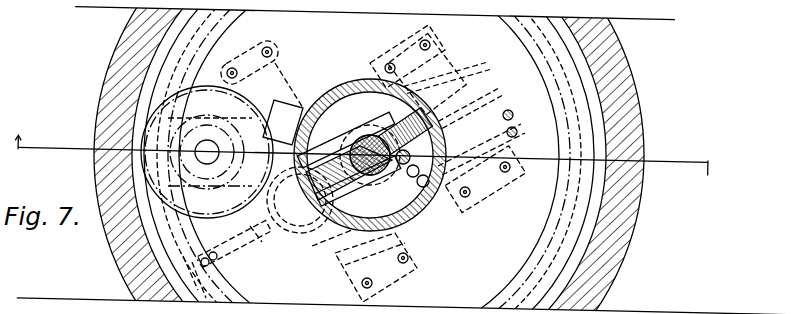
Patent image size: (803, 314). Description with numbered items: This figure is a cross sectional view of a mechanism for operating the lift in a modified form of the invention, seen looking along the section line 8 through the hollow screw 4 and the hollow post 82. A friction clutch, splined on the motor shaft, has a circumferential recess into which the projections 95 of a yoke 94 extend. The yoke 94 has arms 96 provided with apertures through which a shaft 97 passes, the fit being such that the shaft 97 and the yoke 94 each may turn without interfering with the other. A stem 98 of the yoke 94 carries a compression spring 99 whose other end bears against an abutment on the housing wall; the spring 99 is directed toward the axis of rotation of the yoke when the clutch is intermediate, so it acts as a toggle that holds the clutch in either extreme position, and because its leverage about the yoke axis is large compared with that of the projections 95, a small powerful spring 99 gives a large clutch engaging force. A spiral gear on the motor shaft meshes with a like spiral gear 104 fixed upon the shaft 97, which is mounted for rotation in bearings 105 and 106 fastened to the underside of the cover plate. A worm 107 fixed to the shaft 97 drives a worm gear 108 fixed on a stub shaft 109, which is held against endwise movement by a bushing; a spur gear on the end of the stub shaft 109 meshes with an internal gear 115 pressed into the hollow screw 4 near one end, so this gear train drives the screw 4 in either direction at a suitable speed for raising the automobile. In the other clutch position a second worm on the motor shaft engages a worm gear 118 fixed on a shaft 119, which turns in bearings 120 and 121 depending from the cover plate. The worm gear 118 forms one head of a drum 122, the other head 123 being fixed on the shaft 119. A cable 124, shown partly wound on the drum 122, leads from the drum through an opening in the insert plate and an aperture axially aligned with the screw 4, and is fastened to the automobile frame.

The hollow screw 4 is at (106, 242).
The section line 8- 8 is at (361, 165).
The hollow post 82 is at (358, 80).
The yoke 94 is at (338, 132).
The projections 95 is at (362, 135).
The arms 96 is at (377, 173).
The shaft 97 is at (340, 230).
The stem 98 is at (258, 236).
The compression spring 99 is at (222, 262).
The spiral gear 104 is at (322, 198).
The bearing 105 is at (410, 256).
The bearing 106 is at (276, 50).
The worm 107 is at (289, 73).
The worm gear 108 is at (256, 127).
The stub shaft 109 is at (221, 136).
The internal gear 115 is at (213, 32).
The worm gear 118 is at (486, 78).
The shaft 119 is at (449, 70).
The bearing 120 is at (506, 168).
The bearing 121 is at (384, 60).
The drum 122 is at (512, 115).
The drum head 123 is at (514, 137).
The cable 124 is at (492, 93).